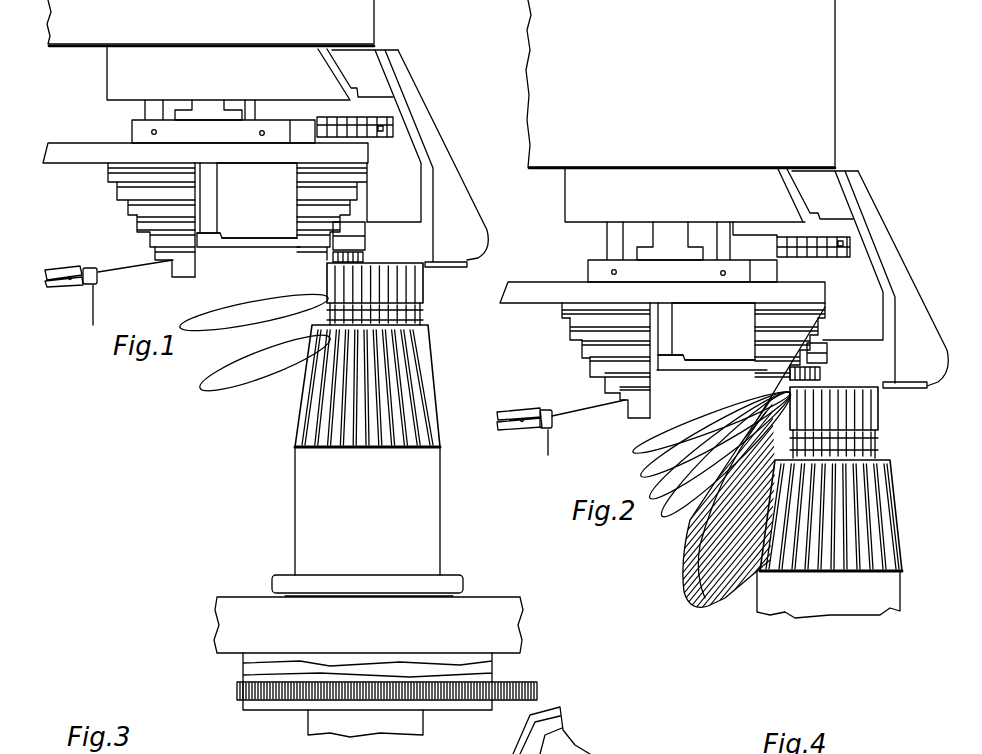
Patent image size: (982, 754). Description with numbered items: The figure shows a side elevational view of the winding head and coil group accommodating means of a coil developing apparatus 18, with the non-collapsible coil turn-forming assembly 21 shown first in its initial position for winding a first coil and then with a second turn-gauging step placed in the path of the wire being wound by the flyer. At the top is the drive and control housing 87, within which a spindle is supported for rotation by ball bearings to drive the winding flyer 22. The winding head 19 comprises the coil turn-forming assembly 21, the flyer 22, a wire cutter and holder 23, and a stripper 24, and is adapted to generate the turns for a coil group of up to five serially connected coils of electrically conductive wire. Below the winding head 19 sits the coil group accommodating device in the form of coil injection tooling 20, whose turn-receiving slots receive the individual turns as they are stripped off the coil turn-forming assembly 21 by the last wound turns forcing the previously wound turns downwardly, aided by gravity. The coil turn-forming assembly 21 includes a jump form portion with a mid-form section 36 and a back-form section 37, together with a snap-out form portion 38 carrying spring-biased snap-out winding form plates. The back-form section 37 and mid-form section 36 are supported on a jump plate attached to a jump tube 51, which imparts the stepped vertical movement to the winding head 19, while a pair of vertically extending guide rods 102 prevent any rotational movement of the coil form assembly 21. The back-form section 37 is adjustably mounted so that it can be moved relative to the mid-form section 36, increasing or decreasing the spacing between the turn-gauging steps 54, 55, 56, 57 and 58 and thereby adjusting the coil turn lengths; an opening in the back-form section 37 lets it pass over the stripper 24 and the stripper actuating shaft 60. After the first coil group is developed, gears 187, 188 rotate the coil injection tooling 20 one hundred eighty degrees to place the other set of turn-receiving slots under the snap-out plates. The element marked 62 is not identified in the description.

In FIG. 1, the drive and control housing 87 is at (377, 24).
In FIG. 2, the drive and control housing 87 is at (838, 90).
In FIG. 1, the coil developing apparatus 18 is at (463, 88).
In FIG. 2, the coil developing apparatus 18 is at (908, 121).
In FIG. 1, the flyer 22 is at (450, 156).
In FIG. 2, the flyer 22 is at (897, 255).
In FIG. 1, the jump tube 51 is at (207, 107).
In FIG. 2, the jump tube 51 is at (670, 230).
In FIG. 1, the guide rods 102 is at (252, 118).
In FIG. 2, the guide rods 102 is at (723, 247).
In FIG. 1, the coil turn-forming assembly 21 is at (372, 157).
In FIG. 2, the coil turn-forming assembly 21 is at (829, 303).
In FIG. 2, the back-form section 37 is at (617, 332).
In FIG. 1, the turn-gauging step 54 is at (117, 190).
In FIG. 2, the turn-gauging step 54 is at (577, 330).
In FIG. 1, the turn-gauging step 55 is at (130, 210).
In FIG. 2, the turn-gauging step 55 is at (593, 347).
In FIG. 1, the turn-gauging step 56 is at (142, 230).
In FIG. 2, the turn-gauging step 56 is at (603, 366).
In FIG. 1, the turn-gauging step 57 is at (155, 245).
In FIG. 2, the turn-gauging step 57 is at (620, 383).
In FIG. 1, the turn-gauging step 58 is at (173, 272).
In FIG. 2, the turn-gauging step 58 is at (637, 410).
In FIG. 1, the stripper actuating shaft 60 is at (218, 200).
In FIG. 2, the stripper actuating shaft 60 is at (677, 337).
In FIG. 1, the winding head 19 is at (286, 215).
In FIG. 2, the winding head 19 is at (739, 336).
In FIG. 1, the stripper 24 is at (242, 247).
In FIG. 2, the stripper 24 is at (702, 363).
In FIG. 2, the mid-form section 36 is at (790, 348).
In FIG. 1, the snap-out form portion 38 is at (397, 212).
In FIG. 2, the snap-out form portion 38 is at (860, 330).
In FIG. 1, the toothed element 62 is at (398, 262).
In FIG. 2, the toothed element 62 is at (867, 383).
In FIG. 1, the coil injection tooling 20 is at (302, 400).
In FIG. 2, the coil injection tooling 20 is at (895, 490).
In FIG. 1, the wire cutter and holder 23 is at (67, 287).
In FIG. 2, the wire cutter and holder 23 is at (523, 427).
In FIG. 1, the gear 187 is at (457, 697).
In FIG. 1, the gear 188 is at (537, 690).